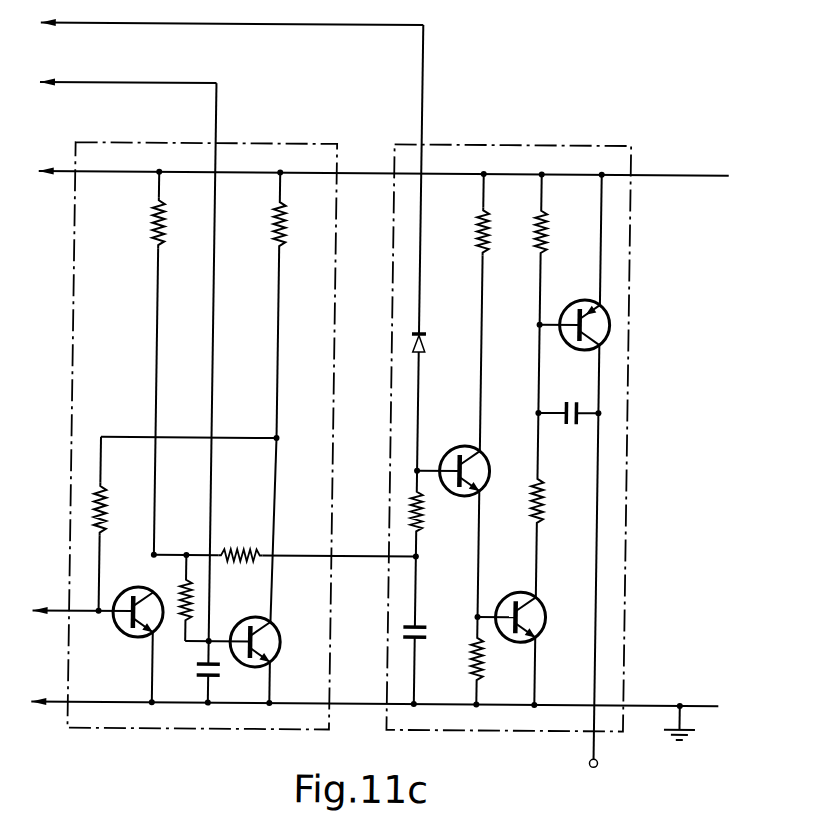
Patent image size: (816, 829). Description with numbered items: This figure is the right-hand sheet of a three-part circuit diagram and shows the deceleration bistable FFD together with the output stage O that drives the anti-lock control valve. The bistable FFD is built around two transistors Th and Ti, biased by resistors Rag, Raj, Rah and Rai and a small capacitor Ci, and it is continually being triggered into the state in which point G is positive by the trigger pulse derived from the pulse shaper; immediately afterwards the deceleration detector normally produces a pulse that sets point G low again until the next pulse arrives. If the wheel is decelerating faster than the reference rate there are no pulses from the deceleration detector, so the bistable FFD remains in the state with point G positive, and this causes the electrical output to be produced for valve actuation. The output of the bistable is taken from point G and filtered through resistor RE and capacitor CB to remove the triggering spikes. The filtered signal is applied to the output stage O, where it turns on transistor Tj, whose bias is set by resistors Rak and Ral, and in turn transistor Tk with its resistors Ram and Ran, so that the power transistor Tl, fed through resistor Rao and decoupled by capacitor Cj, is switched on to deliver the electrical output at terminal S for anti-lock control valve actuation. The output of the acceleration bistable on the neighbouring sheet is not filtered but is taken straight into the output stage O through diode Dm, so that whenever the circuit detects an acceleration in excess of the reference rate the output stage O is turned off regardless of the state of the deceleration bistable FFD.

The resistor Rag is at (152, 230).
The resistor Raj is at (274, 232).
The resistor Rah is at (113, 509).
The resistor Rai is at (190, 577).
The resistor Rak is at (420, 495).
The resistor Ral is at (477, 232).
The resistor Ram is at (472, 675).
The resistor Ran is at (546, 503).
The resistor Rao is at (541, 232).
The resistor RE is at (229, 552).
The transistor Th is at (136, 589).
The transistor Ti is at (249, 619).
The transistor Tj is at (457, 447).
The transistor Tk is at (541, 600).
The transistor Tl is at (571, 303).
The diode Dm is at (425, 345).
The capacitor Ci is at (199, 675).
The capacitor Cj is at (569, 424).
The capacitor CB is at (422, 623).
The point G is at (153, 554).
The bistable FFD is at (188, 730).
The output stage O is at (465, 732).
The output terminal S is at (605, 762).